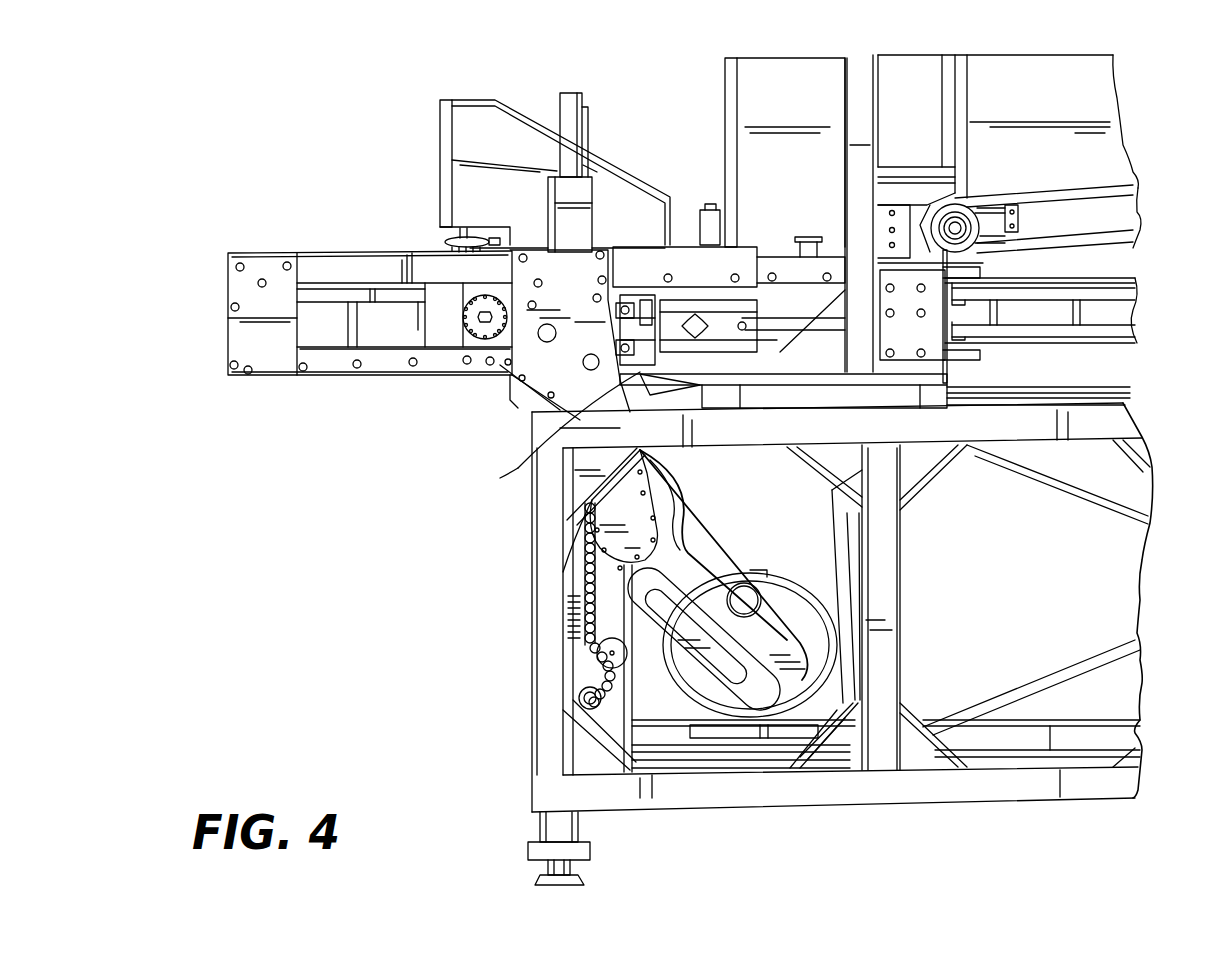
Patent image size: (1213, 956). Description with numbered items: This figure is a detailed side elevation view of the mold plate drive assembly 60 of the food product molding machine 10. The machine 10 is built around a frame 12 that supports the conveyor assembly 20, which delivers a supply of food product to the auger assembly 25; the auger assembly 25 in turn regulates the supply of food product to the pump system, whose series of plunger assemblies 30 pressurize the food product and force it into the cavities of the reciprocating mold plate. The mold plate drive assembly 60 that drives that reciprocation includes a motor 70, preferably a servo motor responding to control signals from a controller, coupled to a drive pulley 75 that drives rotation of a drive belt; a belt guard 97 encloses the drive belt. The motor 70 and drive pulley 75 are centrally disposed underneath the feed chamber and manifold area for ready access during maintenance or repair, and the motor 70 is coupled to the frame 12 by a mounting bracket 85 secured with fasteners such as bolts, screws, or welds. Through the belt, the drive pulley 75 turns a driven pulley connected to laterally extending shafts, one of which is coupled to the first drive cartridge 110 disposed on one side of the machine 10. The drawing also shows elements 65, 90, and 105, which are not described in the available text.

The food product molding machine 10 is at (365, 682).
The frame 12 is at (532, 555).
The conveyor assembly 20 is at (1123, 213).
The auger assembly 25 is at (735, 102).
The plunger assemblies 30 is at (1040, 315).
The mold plate drive assembly 60 is at (398, 398).
The bracket 65 is at (454, 132).
The motor 70 is at (813, 603).
The drive pulley 75 is at (693, 593).
The mounting bracket 85 is at (710, 733).
The mounting plate 90 is at (545, 455).
The belt guard 97 is at (700, 547).
The housing 105 is at (1093, 102).
The first drive cartridge 110 is at (505, 386).